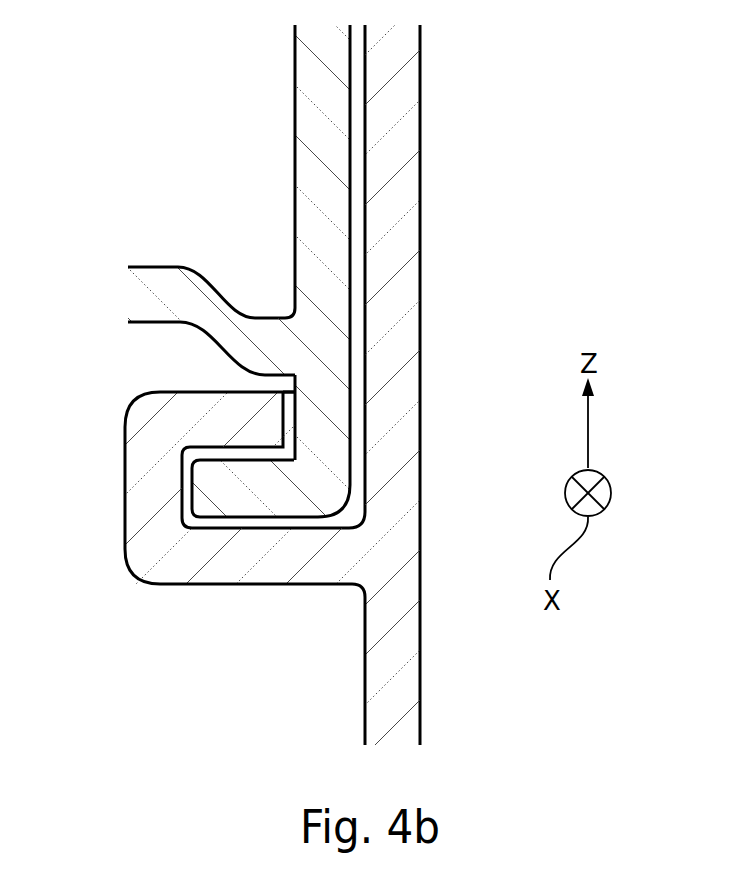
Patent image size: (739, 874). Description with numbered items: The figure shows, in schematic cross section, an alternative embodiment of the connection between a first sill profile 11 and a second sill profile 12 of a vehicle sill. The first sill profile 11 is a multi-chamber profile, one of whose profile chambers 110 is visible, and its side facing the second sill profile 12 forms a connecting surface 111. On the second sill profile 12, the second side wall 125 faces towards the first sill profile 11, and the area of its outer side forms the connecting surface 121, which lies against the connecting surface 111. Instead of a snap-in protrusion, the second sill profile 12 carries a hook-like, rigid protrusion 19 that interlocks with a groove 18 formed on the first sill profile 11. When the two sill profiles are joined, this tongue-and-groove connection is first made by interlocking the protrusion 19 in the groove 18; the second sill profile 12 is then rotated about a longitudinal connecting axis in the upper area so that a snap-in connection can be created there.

The first sill profile 11 is at (121, 290).
The profile chamber 110 is at (233, 111).
The connecting surface 111 is at (350, 100).
The second sill profile 12 is at (438, 86).
The connecting surface 121 is at (366, 213).
The second side wall 125 is at (380, 675).
The groove 18 is at (288, 388).
The hook-like rigid protrusion 19 is at (143, 508).